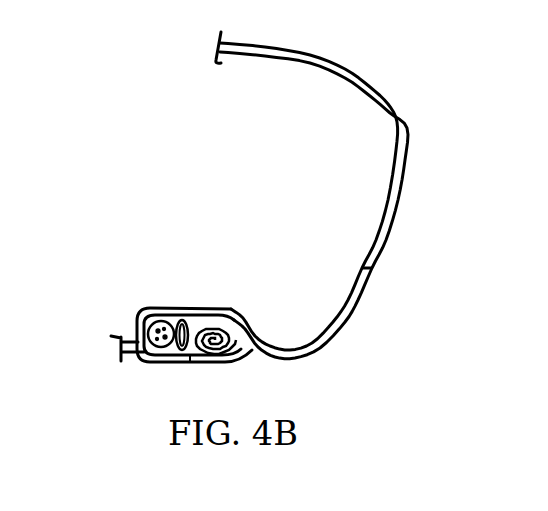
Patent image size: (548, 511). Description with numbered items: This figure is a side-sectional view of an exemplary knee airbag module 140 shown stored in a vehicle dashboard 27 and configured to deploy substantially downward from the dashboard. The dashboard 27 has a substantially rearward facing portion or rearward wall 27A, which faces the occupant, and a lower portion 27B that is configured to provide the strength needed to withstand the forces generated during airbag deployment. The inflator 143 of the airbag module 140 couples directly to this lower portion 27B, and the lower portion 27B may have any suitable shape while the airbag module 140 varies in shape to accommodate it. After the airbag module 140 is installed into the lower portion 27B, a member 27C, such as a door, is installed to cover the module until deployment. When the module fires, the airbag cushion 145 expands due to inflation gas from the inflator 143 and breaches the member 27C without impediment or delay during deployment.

The dashboard 27 is at (406, 161).
The rearward wall 27A is at (367, 268).
The lower portion 27B is at (201, 322).
The member 27C is at (191, 358).
The airbag module 140 is at (165, 278).
The inflator 143 is at (138, 331).
The airbag cushion 145 is at (189, 336).